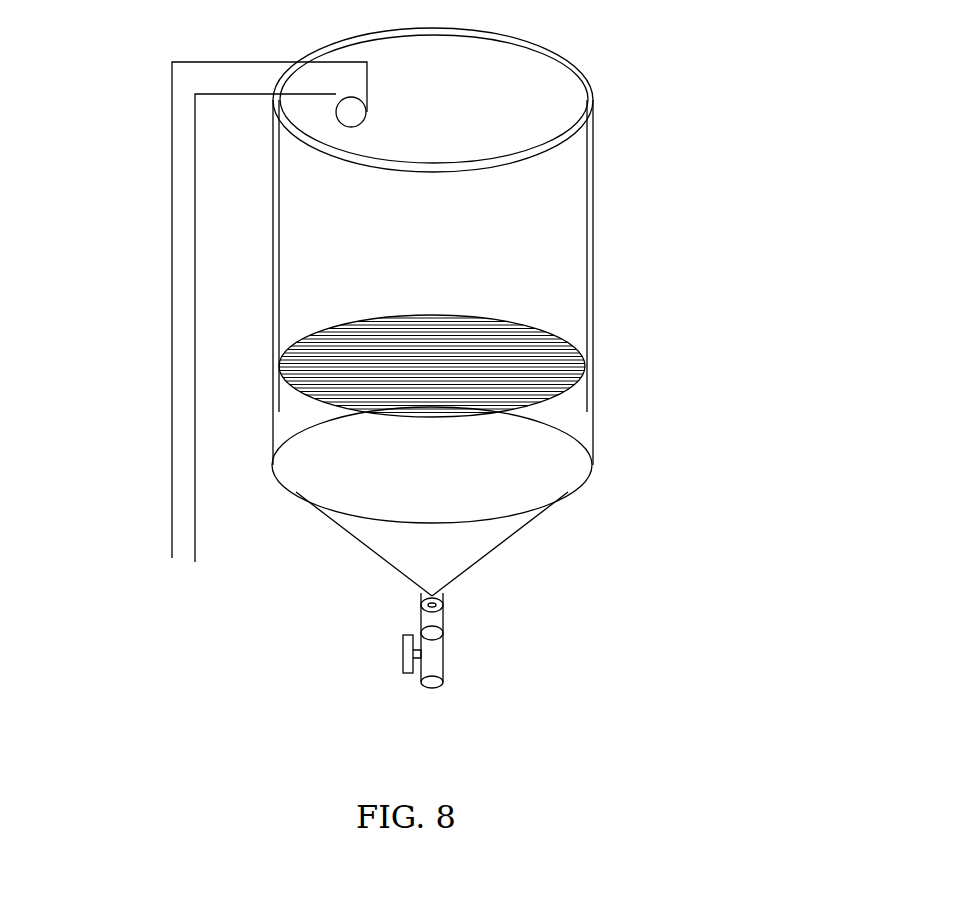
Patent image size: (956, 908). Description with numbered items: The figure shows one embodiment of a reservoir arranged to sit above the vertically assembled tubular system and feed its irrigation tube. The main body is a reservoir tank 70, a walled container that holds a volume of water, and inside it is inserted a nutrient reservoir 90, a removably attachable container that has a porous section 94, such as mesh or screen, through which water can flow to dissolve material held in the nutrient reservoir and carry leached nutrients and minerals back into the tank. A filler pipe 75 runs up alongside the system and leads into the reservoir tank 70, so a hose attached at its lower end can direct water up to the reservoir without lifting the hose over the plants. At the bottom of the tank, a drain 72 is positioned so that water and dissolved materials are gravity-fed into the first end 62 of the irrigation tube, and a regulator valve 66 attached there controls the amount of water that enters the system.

The nutrient reservoir 90 is at (586, 233).
The filler pipe 75 is at (350, 112).
The porous section 94 is at (490, 356).
The reservoir tank 70 is at (594, 460).
The drain 72 is at (446, 605).
The first end of the irrigation tube 62 is at (446, 635).
The regulator valve 66 is at (396, 653).